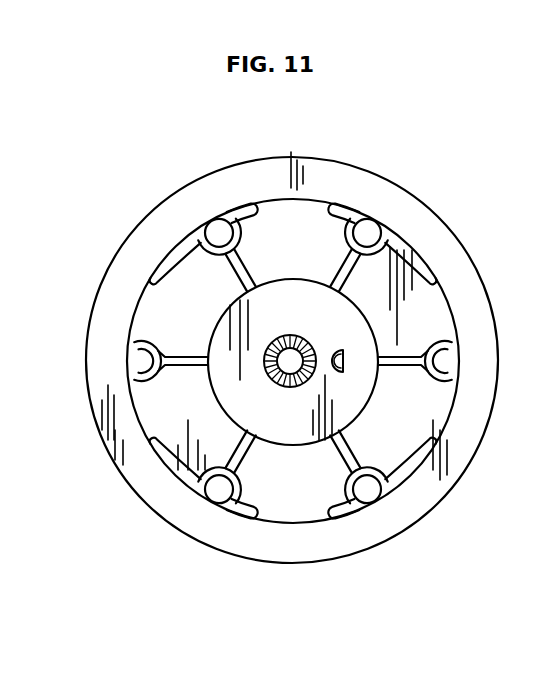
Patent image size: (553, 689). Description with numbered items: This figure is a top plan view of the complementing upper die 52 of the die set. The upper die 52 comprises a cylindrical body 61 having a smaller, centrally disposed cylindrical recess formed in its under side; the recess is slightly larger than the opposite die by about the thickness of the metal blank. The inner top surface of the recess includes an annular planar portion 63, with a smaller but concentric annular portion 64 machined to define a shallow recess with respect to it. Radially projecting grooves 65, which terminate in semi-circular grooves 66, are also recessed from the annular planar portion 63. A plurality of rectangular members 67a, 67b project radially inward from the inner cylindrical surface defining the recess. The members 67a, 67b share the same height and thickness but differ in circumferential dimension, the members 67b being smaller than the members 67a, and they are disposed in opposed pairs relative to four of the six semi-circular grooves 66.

The upper die 52 is at (462, 218).
The cylindrical body 61 is at (148, 213).
The annular planar portion 63 is at (156, 300).
The annular portion 64 is at (231, 389).
The radially projecting grooves 65 is at (250, 268).
The semi-circular grooves 66 is at (244, 236).
The rectangular members 67a is at (172, 474).
The rectangular members 67b is at (238, 506).